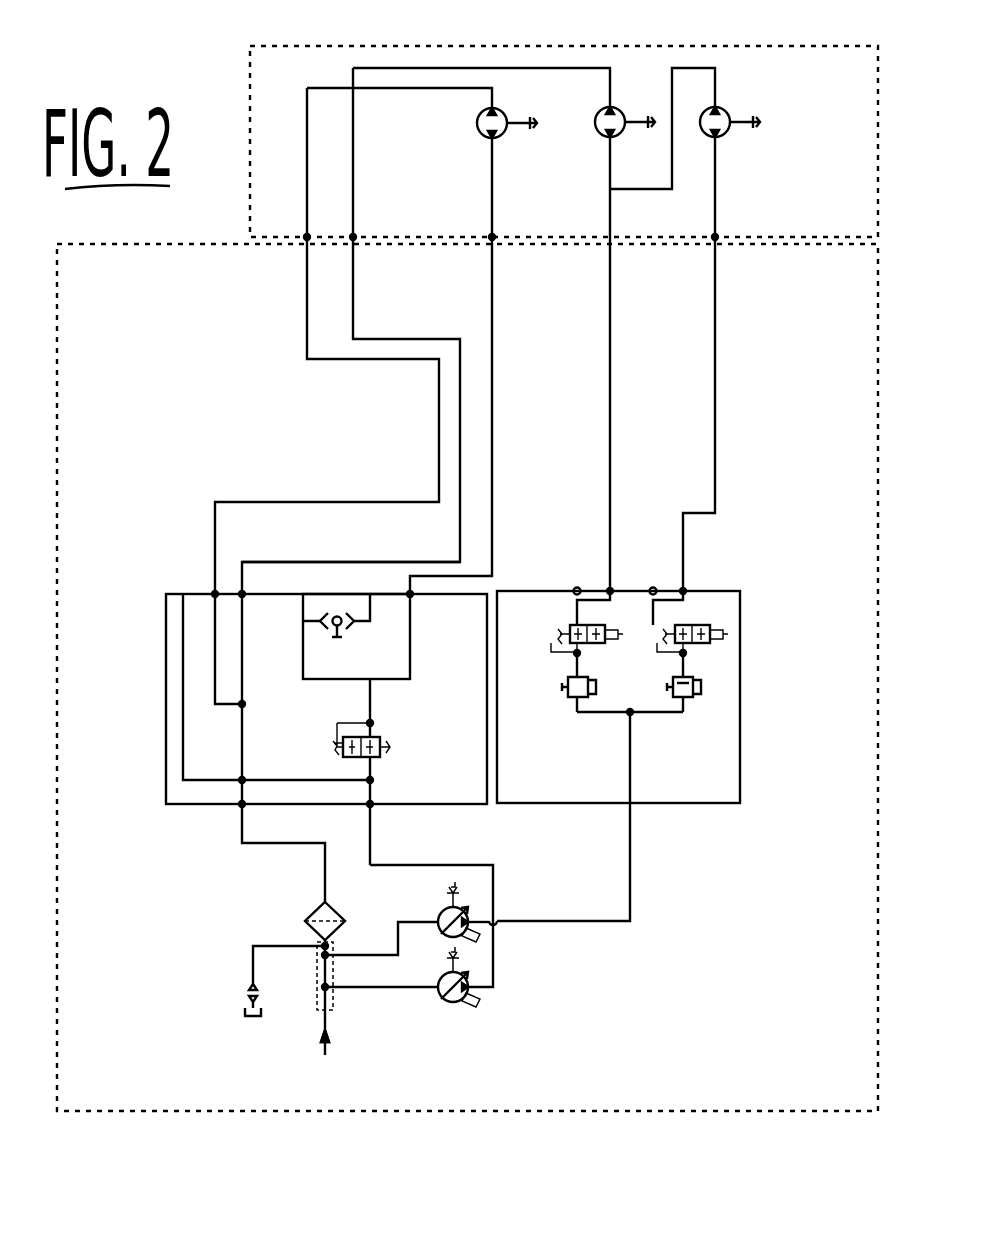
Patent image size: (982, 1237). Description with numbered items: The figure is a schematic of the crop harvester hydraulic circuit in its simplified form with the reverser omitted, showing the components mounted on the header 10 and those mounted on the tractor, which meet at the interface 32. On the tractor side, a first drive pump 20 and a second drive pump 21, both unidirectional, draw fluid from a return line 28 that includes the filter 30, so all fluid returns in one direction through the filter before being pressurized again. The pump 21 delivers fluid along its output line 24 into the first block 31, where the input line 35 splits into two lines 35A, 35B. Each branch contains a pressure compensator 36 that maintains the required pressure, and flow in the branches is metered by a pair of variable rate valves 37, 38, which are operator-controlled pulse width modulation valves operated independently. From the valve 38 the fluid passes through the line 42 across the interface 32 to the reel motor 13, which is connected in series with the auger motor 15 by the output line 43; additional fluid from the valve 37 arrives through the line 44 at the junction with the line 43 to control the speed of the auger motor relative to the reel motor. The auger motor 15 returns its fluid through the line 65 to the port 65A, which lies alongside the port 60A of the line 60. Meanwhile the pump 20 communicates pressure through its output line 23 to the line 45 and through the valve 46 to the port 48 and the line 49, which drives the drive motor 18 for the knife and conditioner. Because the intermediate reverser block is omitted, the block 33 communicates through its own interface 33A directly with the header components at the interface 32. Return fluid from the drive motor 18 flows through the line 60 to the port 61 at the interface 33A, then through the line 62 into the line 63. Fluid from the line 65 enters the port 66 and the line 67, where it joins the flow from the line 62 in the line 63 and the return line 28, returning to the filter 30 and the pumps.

The header 10 is at (803, 35).
The reel motor 13 is at (718, 137).
The auger motor 15 is at (598, 112).
The drive motor 18 is at (495, 138).
The first drive pump 20 is at (460, 1007).
The second drive pump 21 is at (465, 940).
The output line 23 is at (495, 880).
The output line 24 is at (631, 833).
The return line 28 is at (295, 843).
The filter 30 is at (352, 890).
The first block 31 is at (661, 696).
The interface 32 is at (782, 240).
The block 33 is at (158, 673).
The interface 33A is at (270, 594).
The input line 35 is at (630, 783).
The line 35A is at (577, 712).
The line 35B is at (653, 715).
The pressure compensator 36 is at (707, 677).
The variable rate valve 37 is at (567, 623).
The variable rate valve 38 is at (698, 627).
The line 42 is at (715, 400).
The output line 43 is at (650, 233).
The line 44 is at (610, 383).
The line 45 is at (372, 792).
The valve 46 is at (385, 733).
The port 48 is at (413, 595).
The line 49 is at (492, 425).
The line 60 is at (302, 305).
The port 60A is at (307, 237).
The port 61 is at (213, 594).
The line 62 is at (215, 658).
The line 63 is at (243, 747).
The line 65 is at (383, 70).
The port 65A is at (358, 236).
The port 66 is at (241, 594).
The line 67 is at (245, 635).